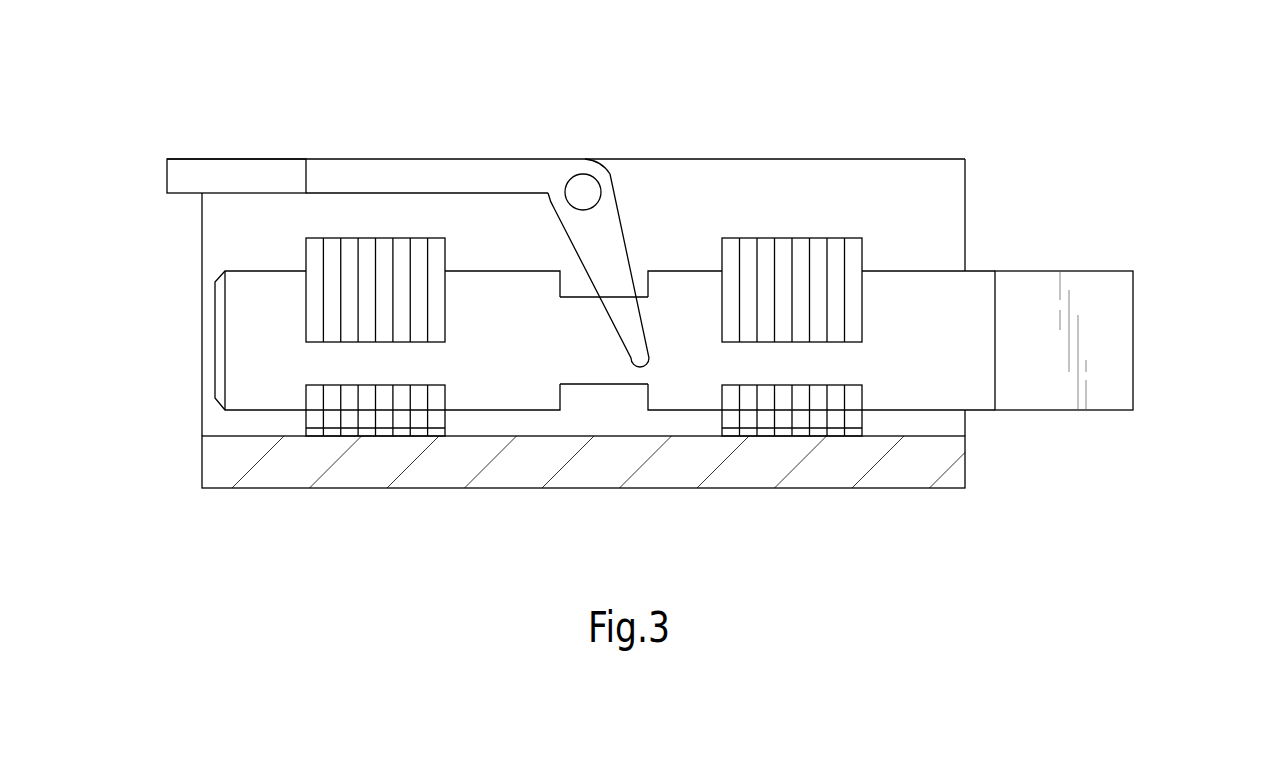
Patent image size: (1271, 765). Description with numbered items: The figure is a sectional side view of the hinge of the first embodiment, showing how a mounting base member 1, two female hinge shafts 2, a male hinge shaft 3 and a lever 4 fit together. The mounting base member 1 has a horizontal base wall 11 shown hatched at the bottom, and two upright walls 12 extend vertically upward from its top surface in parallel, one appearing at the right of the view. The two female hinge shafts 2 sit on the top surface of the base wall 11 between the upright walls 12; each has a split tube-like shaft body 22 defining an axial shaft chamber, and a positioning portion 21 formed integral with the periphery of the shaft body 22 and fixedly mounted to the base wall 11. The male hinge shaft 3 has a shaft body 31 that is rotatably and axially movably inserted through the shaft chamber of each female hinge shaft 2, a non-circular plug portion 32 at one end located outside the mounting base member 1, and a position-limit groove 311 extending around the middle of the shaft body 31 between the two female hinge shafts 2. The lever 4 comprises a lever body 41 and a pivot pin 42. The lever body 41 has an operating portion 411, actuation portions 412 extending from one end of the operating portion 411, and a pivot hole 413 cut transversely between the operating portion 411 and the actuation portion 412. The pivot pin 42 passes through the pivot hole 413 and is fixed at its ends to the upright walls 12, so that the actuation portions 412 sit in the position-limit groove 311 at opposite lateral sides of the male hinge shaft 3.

The mounting base member 1 is at (190, 445).
The horizontal base wall 11 is at (828, 475).
The upright wall 12 is at (915, 159).
The female hinge shaft 2 is at (588, 325).
The positioning portion 21 is at (363, 433).
The split tube-like shaft body 22 is at (402, 246).
The male hinge shaft 3 is at (670, 349).
The shaft body 31 is at (247, 332).
The position-limit groove 311 is at (620, 415).
The non-circular plug portion 32 is at (1112, 315).
The lever 4 is at (529, 196).
The lever body 41 is at (529, 123).
The operating portion 411 is at (178, 172).
The pivot pin 42 is at (585, 188).
The actuation portion 412 is at (605, 250).
The pivot hole 413 is at (598, 185).